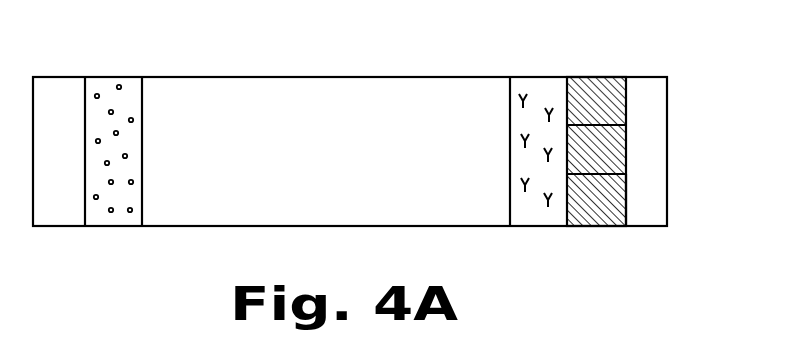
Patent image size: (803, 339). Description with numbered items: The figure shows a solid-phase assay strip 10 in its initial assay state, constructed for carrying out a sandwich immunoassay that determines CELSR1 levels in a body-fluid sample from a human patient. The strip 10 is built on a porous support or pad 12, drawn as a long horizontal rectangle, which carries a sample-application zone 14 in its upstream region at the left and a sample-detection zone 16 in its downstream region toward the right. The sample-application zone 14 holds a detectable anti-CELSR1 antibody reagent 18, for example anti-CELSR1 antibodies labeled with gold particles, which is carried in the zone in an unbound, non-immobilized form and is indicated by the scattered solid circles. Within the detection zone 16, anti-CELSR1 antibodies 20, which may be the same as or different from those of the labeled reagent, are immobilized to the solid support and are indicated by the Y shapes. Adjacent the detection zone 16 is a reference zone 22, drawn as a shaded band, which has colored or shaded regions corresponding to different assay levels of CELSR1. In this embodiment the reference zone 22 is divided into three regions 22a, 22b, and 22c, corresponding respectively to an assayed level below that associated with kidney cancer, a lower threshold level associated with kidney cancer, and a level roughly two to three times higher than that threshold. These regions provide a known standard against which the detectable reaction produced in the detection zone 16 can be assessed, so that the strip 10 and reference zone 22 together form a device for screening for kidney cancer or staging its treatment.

The assay strip 10 is at (351, 75).
The porous support 12 is at (221, 224).
The sample-application zone 14 is at (91, 224).
The sample-detection zone 16 is at (523, 224).
The detectable anti-CELSR1 antibody reagent 18 is at (97, 93).
The immobilized anti-CELSR1 antibodies 20 is at (549, 111).
The reference zone 22 is at (612, 73).
The first region 22a is at (626, 98).
The second region 22b is at (626, 149).
The third region 22c is at (626, 198).